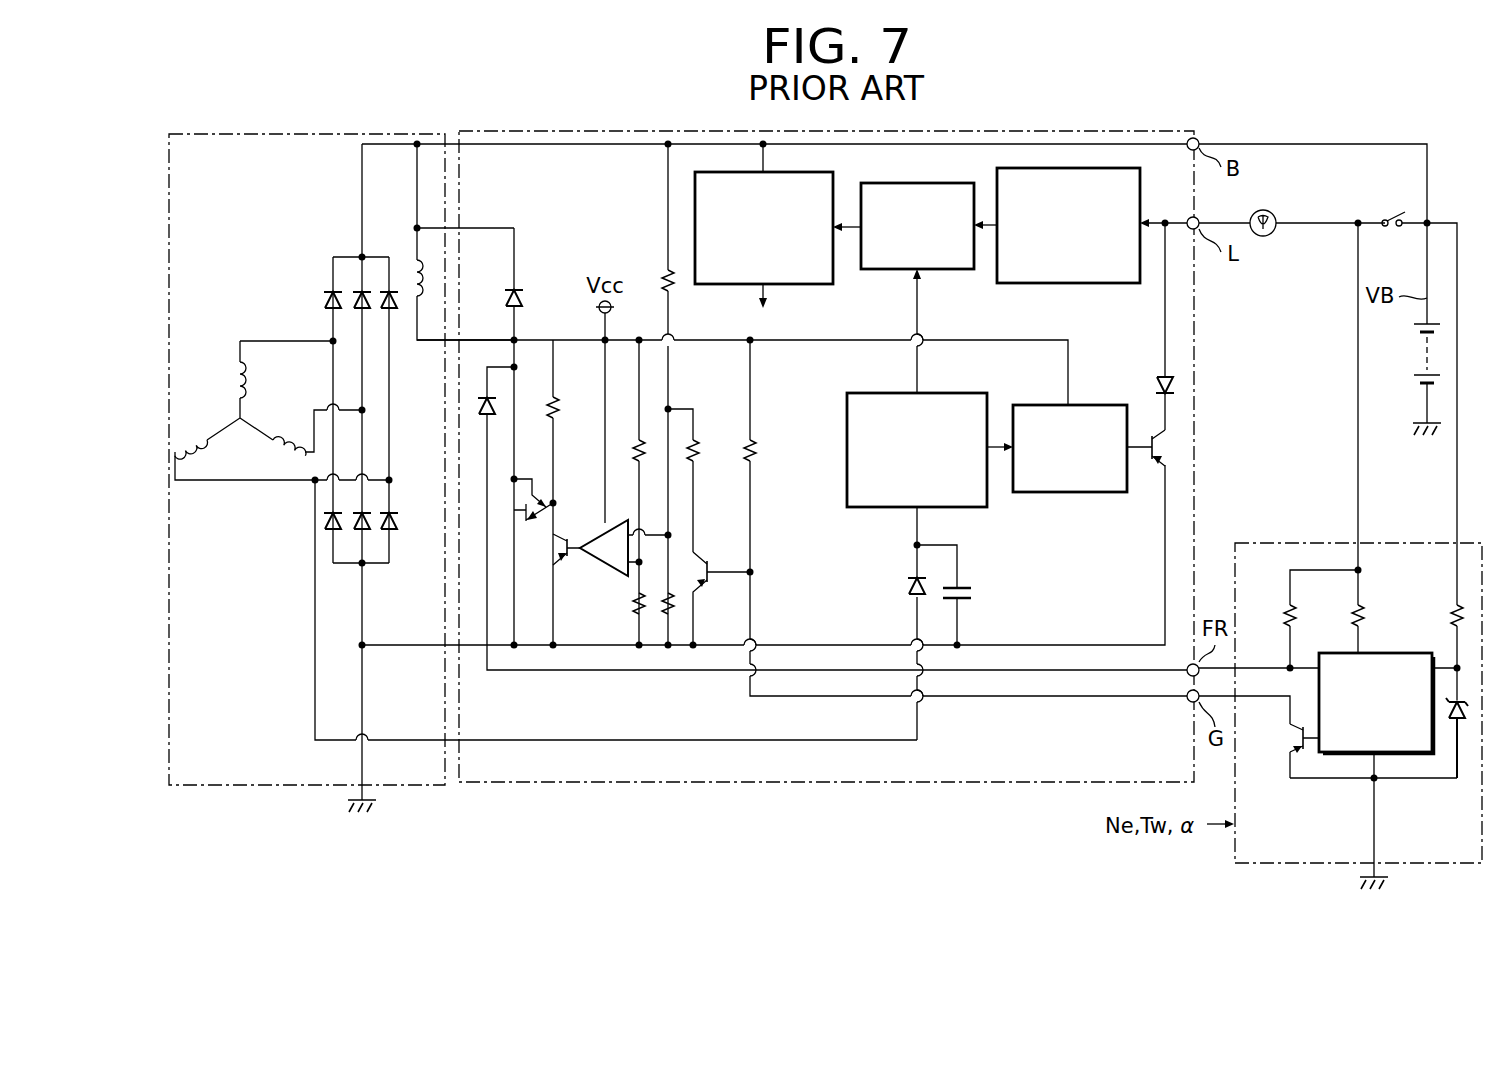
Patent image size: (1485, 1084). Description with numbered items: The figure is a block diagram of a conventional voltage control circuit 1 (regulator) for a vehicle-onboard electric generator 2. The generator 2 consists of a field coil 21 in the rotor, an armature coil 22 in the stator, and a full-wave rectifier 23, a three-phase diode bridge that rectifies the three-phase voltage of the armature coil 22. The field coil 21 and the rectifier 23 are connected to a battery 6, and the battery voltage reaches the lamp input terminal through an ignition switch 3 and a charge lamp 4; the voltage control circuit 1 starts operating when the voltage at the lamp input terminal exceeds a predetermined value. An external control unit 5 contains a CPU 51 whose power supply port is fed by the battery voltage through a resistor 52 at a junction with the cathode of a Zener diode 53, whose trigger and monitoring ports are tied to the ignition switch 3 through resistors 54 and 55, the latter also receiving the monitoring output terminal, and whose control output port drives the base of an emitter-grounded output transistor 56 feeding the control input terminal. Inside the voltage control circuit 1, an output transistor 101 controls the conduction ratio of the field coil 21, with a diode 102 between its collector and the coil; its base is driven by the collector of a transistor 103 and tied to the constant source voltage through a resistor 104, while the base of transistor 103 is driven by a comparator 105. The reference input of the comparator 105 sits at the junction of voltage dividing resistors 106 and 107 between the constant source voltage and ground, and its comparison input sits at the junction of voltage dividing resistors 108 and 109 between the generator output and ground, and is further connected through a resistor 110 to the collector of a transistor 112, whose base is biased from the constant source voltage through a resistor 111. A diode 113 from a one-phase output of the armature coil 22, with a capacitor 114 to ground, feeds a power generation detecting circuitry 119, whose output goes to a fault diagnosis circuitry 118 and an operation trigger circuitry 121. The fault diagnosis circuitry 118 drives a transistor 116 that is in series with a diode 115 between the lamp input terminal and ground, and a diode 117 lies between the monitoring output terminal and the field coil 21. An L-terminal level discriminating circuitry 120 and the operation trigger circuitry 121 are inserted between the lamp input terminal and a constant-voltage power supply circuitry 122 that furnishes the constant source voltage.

The voltage control circuit 1 is at (820, 785).
The vehicle-onboard electric generator 2 is at (239, 788).
The ignition switch 3 is at (1393, 213).
The charge lamp 4 is at (1262, 209).
The external control unit 5 is at (1299, 866).
The battery 6 is at (1422, 362).
The field coil 21 is at (414, 272).
The armature coil 22 is at (227, 382).
The full-wave rectifier 23 is at (353, 338).
The CPU 51 is at (1401, 652).
The resistor 52 is at (1457, 613).
The Zener diode 53 is at (1462, 730).
The resistor 54 is at (1357, 612).
The resistor 55 is at (1290, 608).
The output transistor 56 is at (1291, 745).
The output transistor 101 is at (555, 505).
The diode 102 is at (526, 297).
The transistor 103 is at (566, 558).
The resistor 104 is at (549, 395).
The comparator 105 is at (611, 565).
The voltage dividing resistor 106 is at (643, 438).
The voltage dividing resistor 107 is at (639, 620).
The voltage dividing resistor 108 is at (661, 271).
The voltage dividing resistor 109 is at (668, 620).
The resistor 110 is at (695, 440).
The resistor 111 is at (751, 440).
The transistor 112 is at (701, 590).
The diode 113 is at (910, 587).
The capacitor 114 is at (975, 594).
The diode 115 is at (1163, 377).
The transistor 116 is at (1152, 461).
The diode 117 is at (484, 397).
The fault diagnosis circuitry 118 is at (1090, 404).
The power generation detecting circuitry 119 is at (953, 392).
The L-terminal level discriminating circuitry 120 is at (1030, 172).
The operation trigger circuitry 121 is at (884, 186).
The constant-voltage power supply circuitry 122 is at (781, 171).